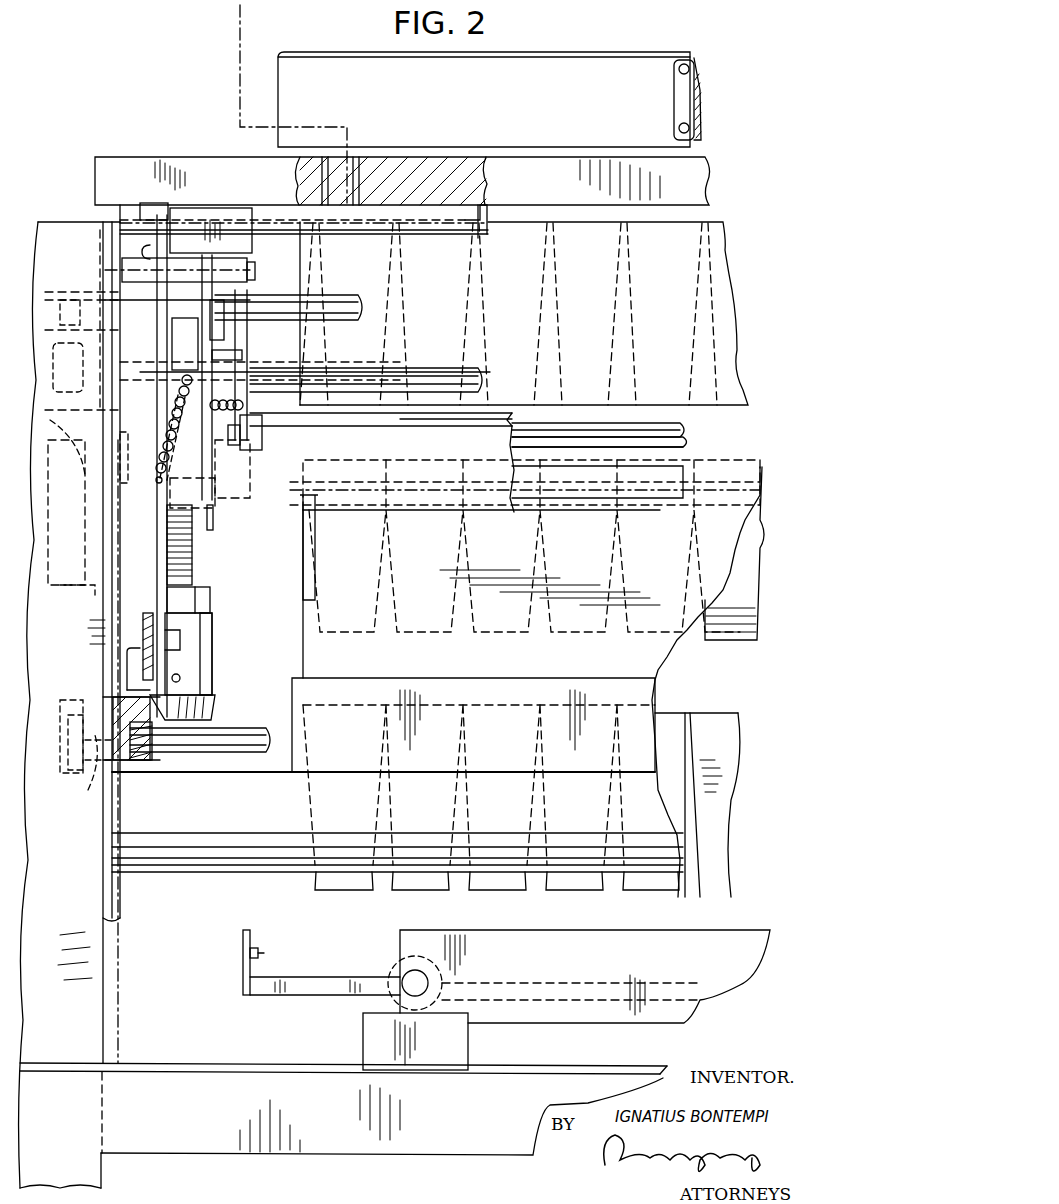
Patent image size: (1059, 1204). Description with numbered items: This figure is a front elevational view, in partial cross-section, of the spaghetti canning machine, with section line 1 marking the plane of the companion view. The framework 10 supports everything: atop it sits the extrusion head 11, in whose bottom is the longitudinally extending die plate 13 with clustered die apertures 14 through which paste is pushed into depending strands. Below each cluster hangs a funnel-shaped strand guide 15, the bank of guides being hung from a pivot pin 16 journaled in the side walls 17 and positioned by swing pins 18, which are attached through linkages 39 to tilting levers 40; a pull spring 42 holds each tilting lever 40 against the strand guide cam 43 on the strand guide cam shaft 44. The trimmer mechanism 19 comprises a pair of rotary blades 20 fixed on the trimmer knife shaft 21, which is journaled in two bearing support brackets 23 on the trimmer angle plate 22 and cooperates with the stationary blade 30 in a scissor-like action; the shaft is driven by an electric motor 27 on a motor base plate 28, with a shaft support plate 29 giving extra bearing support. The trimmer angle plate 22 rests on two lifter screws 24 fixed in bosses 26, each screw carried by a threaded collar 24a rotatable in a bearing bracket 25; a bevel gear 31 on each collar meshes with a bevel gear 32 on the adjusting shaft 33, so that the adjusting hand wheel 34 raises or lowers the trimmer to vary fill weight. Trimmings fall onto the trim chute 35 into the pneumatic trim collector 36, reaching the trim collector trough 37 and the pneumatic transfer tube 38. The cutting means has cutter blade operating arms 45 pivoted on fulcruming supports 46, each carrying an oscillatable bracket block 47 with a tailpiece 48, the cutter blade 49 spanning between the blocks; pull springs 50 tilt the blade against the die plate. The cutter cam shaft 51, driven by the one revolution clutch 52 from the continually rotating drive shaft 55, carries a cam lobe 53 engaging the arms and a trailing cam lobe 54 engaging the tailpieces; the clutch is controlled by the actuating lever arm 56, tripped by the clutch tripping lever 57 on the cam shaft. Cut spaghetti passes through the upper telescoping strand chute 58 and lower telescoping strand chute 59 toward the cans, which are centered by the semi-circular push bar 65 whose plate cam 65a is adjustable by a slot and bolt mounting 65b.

The section line 1 is at (262, 17).
The framework 10 is at (58, 216).
The extrusion head 11 is at (549, 95).
The die plate 13 is at (712, 183).
The die apertures 14 is at (352, 159).
The strand guide 15 is at (728, 354).
The pivot pin 16 is at (262, 235).
The side walls 17 is at (112, 906).
The swing pins 18 is at (254, 420).
The trimmer mechanism 19 is at (690, 446).
The rotary blades 20 is at (675, 432).
The trimmer knife shaft 21 is at (686, 450).
The trimmer angle plate 22 is at (486, 505).
The bearing support brackets 23 is at (232, 506).
The lifter screws 24 is at (194, 577).
The threaded collar 24a is at (210, 598).
The bearing bracket 25 is at (214, 650).
The bosses 26 is at (222, 522).
The electric motor 27 is at (88, 492).
The motor base plate 28 is at (62, 597).
The shaft support plate 29 is at (84, 628).
The stationary blade 30 is at (512, 419).
The bevel gear 31 is at (215, 709).
The bevel gear 32 is at (148, 760).
The adjusting shaft 33 is at (96, 770).
The adjusting hand wheel 34 is at (59, 720).
The trim chute 35 is at (650, 666).
The pneumatic trim collector 36 is at (258, 868).
The trim collector trough 37 is at (388, 692).
The pneumatic transfer tube 38 is at (278, 813).
The linkages 39 is at (252, 430).
The tilting levers 40 is at (256, 342).
The pull spring 42 is at (204, 407).
The strand guide cam 43 is at (220, 296).
The strand guide cam shaft 44 is at (335, 306).
The cutter blade operating arms 45 is at (158, 545).
The fulcruming supports 46 is at (118, 694).
The oscillatable bracket block 47 is at (198, 236).
The tailpiece 48 is at (197, 350).
The cutter blade 49 is at (478, 218).
The pull springs 50 is at (184, 437).
The cutter cam shaft 51 is at (410, 370).
The one revolution clutch 52 is at (82, 355).
The cam lobe 53 is at (155, 390).
The trailing cam lobe 54 is at (170, 458).
The drive shaft 55 is at (73, 320).
The actuating lever arm 56 is at (54, 300).
The clutch tripping lever 57 is at (50, 280).
The upper telescoping strand chute 58 is at (753, 575).
The lower telescoping strand chute 59 is at (722, 811).
The push bar 65 is at (265, 992).
The plate cam 65a is at (243, 949).
The slot and bolt mounting 65b is at (258, 953).